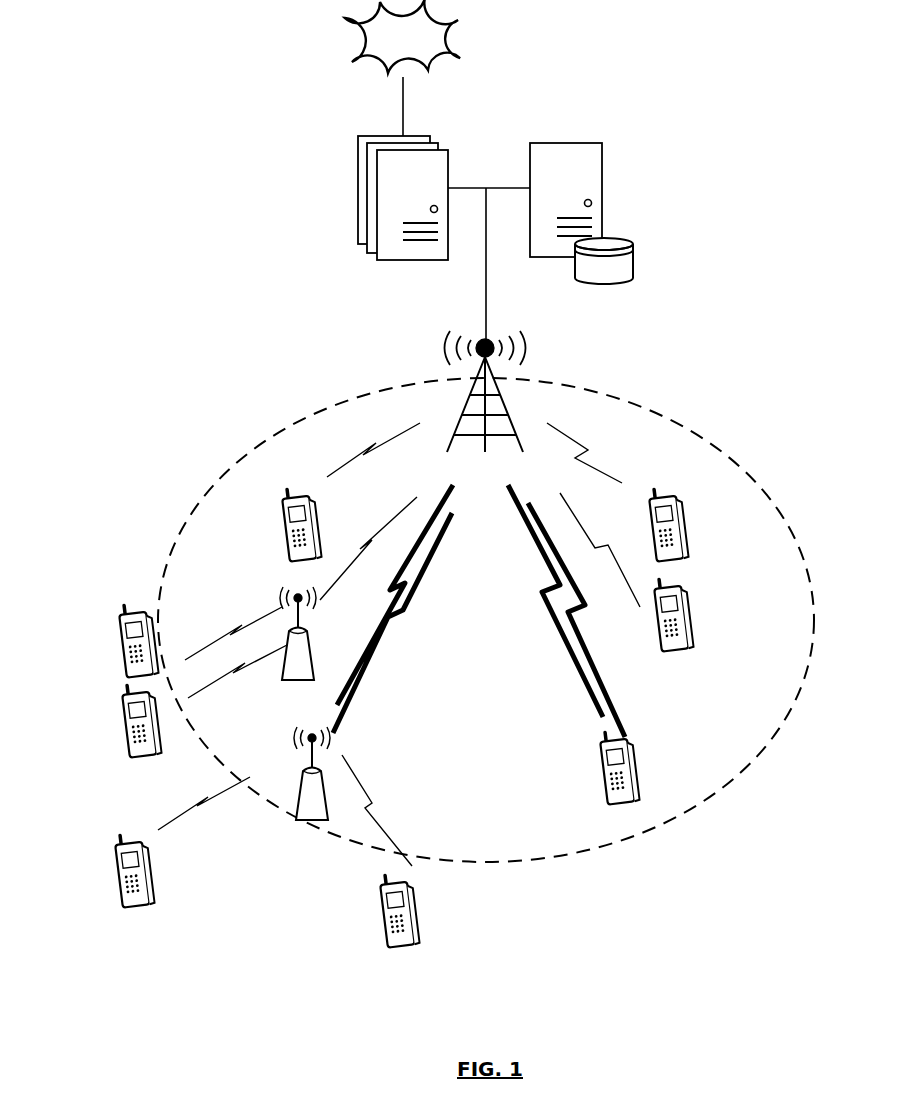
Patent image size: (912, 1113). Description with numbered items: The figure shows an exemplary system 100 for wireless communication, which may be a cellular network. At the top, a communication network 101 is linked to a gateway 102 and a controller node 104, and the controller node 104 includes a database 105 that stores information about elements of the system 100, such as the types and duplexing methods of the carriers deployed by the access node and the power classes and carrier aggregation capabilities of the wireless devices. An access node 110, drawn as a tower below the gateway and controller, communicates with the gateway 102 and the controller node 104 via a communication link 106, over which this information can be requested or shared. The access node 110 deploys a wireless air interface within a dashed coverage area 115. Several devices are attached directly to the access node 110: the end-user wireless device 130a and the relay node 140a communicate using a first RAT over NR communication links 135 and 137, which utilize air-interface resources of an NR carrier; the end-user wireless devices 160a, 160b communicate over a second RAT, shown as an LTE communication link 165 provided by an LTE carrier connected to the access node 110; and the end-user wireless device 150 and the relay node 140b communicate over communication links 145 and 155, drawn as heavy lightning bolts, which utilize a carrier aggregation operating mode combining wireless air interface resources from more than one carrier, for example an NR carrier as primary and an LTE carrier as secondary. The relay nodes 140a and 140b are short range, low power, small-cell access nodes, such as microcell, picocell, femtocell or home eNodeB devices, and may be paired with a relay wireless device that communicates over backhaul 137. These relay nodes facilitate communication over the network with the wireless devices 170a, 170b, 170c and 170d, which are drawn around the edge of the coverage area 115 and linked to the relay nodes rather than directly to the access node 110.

The system 100 is at (513, 82).
The communication network 101 is at (421, 49).
The gateway 102 is at (360, 135).
The controller node 104 is at (604, 143).
The database 105 is at (632, 243).
The communication link 106 is at (485, 270).
The access node 110 is at (466, 412).
The coverage area 115 is at (552, 382).
The end-user wireless device 130a is at (285, 532).
The NR communication link 135 is at (347, 463).
The NR communication link 137 is at (390, 520).
The relay node 140a is at (297, 684).
The relay node 140b is at (298, 820).
The communication link 145 is at (420, 590).
The end-user wireless device 150 is at (638, 790).
The communication link 155 is at (560, 638).
The end-user wireless device 160a is at (687, 548).
The end-user wireless device 160b is at (696, 615).
The LTE communication link 165 is at (590, 450).
The wireless device 170a is at (122, 650).
The wireless device 170b is at (126, 758).
The wireless device 170c is at (147, 907).
The wireless device 170d is at (422, 897).